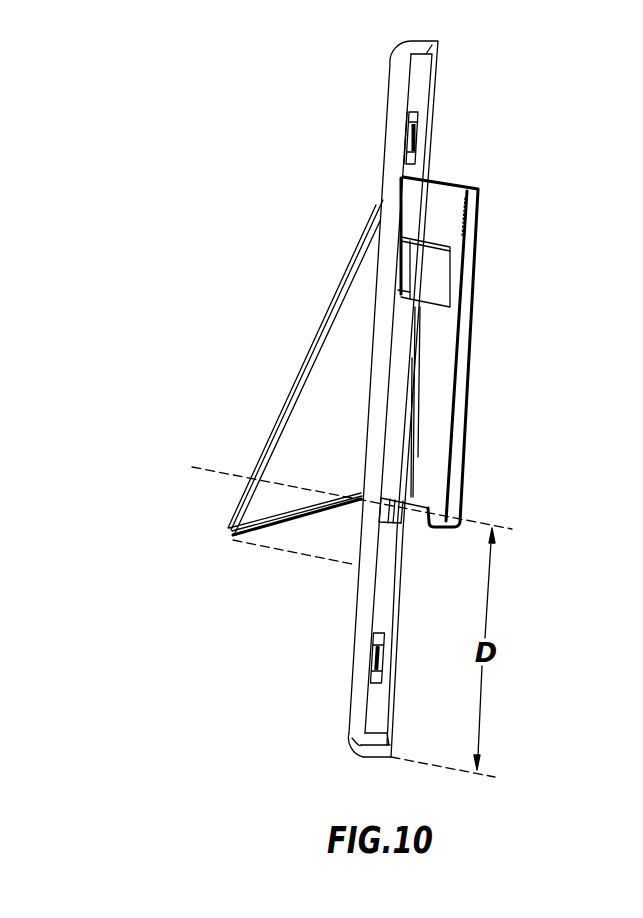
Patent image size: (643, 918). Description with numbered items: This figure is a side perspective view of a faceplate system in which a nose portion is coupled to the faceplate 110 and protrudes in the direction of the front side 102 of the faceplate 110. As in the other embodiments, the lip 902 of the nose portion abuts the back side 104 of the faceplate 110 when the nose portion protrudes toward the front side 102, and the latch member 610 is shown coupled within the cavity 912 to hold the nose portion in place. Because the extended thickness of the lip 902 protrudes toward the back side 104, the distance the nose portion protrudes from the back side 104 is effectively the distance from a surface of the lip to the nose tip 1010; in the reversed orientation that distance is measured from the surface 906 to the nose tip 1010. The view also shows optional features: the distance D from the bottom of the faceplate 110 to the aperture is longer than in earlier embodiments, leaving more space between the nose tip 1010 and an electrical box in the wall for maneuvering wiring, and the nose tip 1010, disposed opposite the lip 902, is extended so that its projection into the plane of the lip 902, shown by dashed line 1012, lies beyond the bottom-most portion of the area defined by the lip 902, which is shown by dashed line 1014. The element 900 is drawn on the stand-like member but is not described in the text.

The front side 102 is at (368, 84).
The back side 104 is at (418, 83).
The faceplate 110 is at (363, 652).
The latch member 610 is at (402, 273).
The stand 900 is at (316, 342).
The lip 902 is at (435, 320).
The surface 906 is at (470, 399).
The cavity 912 is at (437, 277).
The nose tip 1010 is at (228, 533).
The dashed line 1012 is at (300, 555).
The dashed line 1014 is at (215, 470).